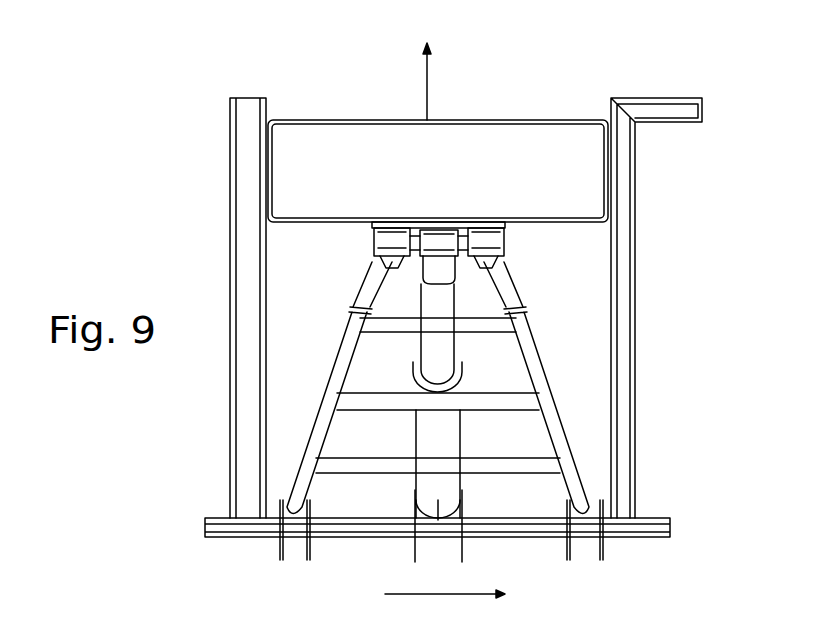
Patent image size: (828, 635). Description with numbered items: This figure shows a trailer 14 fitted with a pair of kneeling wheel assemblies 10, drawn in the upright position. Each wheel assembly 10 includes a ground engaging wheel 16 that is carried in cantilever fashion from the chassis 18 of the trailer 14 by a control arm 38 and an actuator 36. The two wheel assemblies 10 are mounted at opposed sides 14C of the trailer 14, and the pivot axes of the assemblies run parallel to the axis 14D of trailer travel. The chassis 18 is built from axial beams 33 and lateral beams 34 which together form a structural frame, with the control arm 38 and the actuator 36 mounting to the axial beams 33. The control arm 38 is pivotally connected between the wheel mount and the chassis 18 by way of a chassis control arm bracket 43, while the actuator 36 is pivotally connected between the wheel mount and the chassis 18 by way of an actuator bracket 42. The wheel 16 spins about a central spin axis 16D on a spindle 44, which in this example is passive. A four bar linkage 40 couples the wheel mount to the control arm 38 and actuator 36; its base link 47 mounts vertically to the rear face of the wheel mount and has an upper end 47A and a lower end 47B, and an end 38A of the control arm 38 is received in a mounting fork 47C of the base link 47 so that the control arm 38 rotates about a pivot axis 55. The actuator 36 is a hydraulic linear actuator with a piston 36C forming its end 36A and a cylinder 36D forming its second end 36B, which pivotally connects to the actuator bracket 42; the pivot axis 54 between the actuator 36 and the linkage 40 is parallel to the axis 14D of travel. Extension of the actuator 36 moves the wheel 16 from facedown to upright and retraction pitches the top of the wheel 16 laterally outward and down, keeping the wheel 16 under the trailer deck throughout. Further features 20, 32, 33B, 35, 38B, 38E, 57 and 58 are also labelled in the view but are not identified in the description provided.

The wheel assembly 10 is at (207, 66).
The trailer 14 is at (433, 318).
The opposed sides of the trailer 14C is at (523, 92).
The axis of trailer travel 14D is at (447, 597).
The ground engaging wheel 16 is at (545, 155).
The central spin axis 16D is at (428, 90).
The chassis 18 is at (532, 538).
The interior space 20 is at (696, 397).
The top member 32 is at (300, 92).
The axial beams 33 is at (557, 528).
The base beam lower flange 33B is at (233, 540).
The lateral beams 34 is at (243, 333).
The support assembly 35 is at (282, 397).
The actuator 36 is at (418, 390).
The end of the actuator 36A is at (440, 243).
The second end of the actuator 36B is at (447, 520).
The piston 36C is at (448, 358).
The cylinder 36D is at (453, 436).
The control arm 38 is at (338, 370).
The end of the control arm 38A is at (500, 247).
The strut lower end 38B is at (592, 508).
The cross brace 38E is at (480, 322).
The four bar linkage 40 is at (352, 255).
The actuator bracket 42 is at (413, 552).
The chassis control arm bracket 43 is at (607, 553).
The spindle 44 is at (552, 303).
The base link 47 is at (428, 192).
The upper end of the base link 47A is at (455, 238).
The lower end of the base link 47B is at (372, 226).
The mounting fork 47C is at (373, 218).
The pivot axis 54 is at (470, 263).
The pivot axis 55 is at (372, 236).
The column base bracket 57 is at (466, 498).
The strut base bracket 58 is at (312, 508).